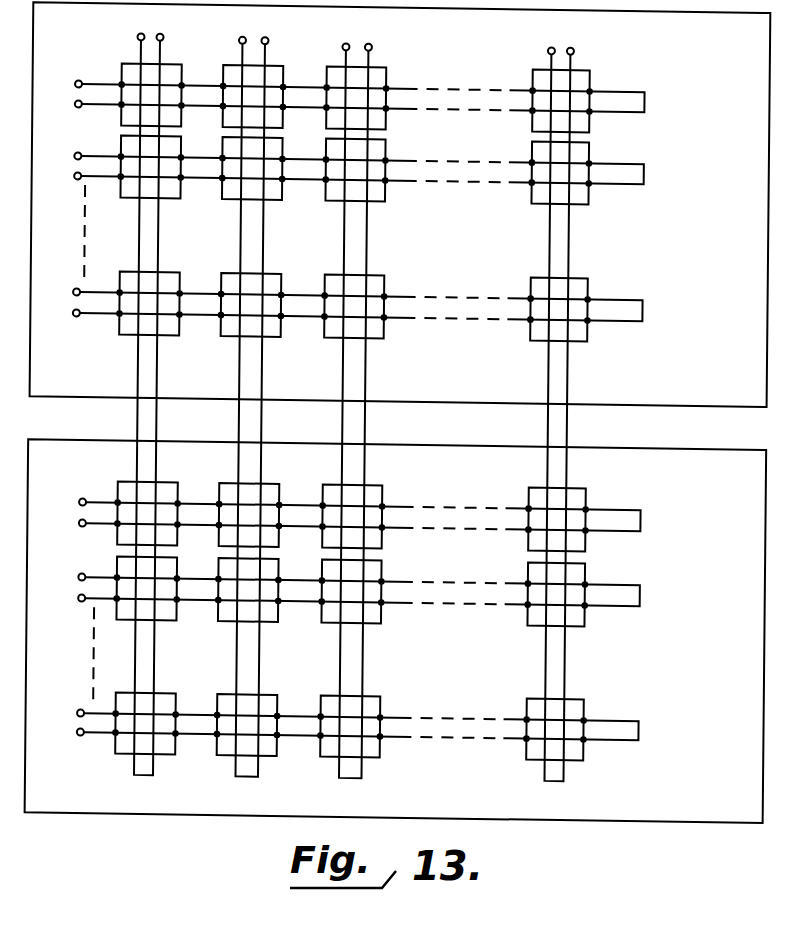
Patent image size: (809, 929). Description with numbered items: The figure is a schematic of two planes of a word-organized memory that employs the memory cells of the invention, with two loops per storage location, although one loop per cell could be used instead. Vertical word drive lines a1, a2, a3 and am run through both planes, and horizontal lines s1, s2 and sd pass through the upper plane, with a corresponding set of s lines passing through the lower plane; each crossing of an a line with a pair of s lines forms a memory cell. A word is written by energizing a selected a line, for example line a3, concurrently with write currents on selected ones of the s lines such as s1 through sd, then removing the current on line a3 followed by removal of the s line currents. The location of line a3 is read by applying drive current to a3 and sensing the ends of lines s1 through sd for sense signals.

The a line a1 is at (147, 392).
The a line a2 is at (250, 394).
The a line a3 is at (353, 398).
The a line am is at (562, 404).
The s line s1 is at (344, 97).
The s line s2 is at (344, 170).
The s line sd is at (339, 310).